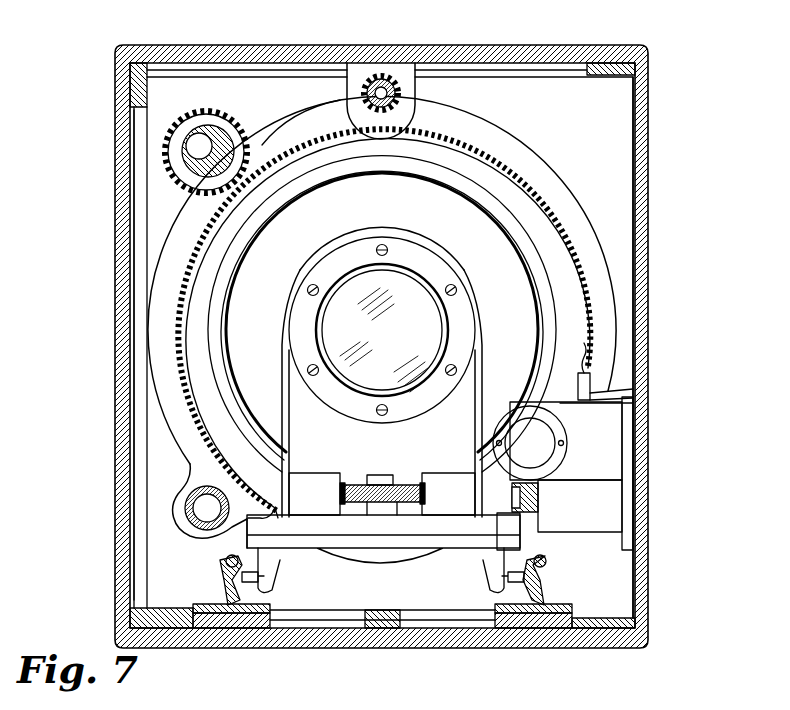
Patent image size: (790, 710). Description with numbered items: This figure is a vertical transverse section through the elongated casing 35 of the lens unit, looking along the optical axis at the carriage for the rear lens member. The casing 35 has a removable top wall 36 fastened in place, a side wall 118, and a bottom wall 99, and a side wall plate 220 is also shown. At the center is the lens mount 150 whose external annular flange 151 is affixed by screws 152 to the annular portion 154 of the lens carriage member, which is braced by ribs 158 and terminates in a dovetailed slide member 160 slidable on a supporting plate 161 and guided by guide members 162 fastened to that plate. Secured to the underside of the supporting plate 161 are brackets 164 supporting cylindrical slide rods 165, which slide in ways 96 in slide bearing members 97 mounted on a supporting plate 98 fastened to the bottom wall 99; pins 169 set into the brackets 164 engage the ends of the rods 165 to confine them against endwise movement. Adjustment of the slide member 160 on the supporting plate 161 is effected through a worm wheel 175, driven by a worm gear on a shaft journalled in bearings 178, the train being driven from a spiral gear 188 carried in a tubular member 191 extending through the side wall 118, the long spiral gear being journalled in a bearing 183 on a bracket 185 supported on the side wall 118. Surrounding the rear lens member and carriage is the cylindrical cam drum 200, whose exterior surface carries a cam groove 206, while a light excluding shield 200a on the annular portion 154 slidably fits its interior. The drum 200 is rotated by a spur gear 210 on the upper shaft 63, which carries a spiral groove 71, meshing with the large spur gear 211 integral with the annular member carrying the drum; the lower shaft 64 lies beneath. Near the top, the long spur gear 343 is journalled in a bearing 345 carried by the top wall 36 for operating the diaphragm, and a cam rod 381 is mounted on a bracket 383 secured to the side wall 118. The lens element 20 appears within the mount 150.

The elongated casing 35 is at (652, 58).
The removable top wall 36 is at (498, 58).
The side wall 118 is at (648, 316).
The side wall plate 220 is at (128, 292).
The cam groove 206 is at (540, 182).
The cam drum 200 is at (530, 197).
The light excluding shield 200a is at (548, 232).
The large spur gear 211 is at (324, 120).
The long spur gear 343 is at (400, 97).
The bearing 345 is at (420, 110).
The spur gear 210 is at (210, 118).
The upper shaft 63 is at (232, 138).
The spiral groove 71 is at (192, 160).
The ribs 158 is at (283, 392).
The annular portion 154 is at (422, 245).
The external annular flange 151 is at (443, 273).
The lens mount 150 is at (450, 305).
The lens 20 is at (425, 322).
The screws 152 is at (378, 412).
The dovetailed slide member 160 is at (334, 522).
The supporting plate 161 is at (420, 540).
The bearings 178 is at (314, 496).
The worm wheel 175 is at (372, 484).
The guide members 162 is at (258, 515).
The bracket 185 is at (612, 450).
The bearing 183 is at (568, 432).
The spiral gear 188 is at (540, 493).
The tubular member 191 is at (600, 522).
The cam rod 381 is at (590, 384).
The bracket 383 is at (633, 395).
The lower shaft 64 is at (195, 527).
The ways 96 is at (226, 560).
The slide bearing members 97 is at (220, 566).
The cylindrical slide rods 165 is at (226, 580).
The brackets 164 is at (265, 578).
The pins 169 is at (266, 590).
The supporting plate 98 is at (256, 630).
The bottom wall 99 is at (386, 640).